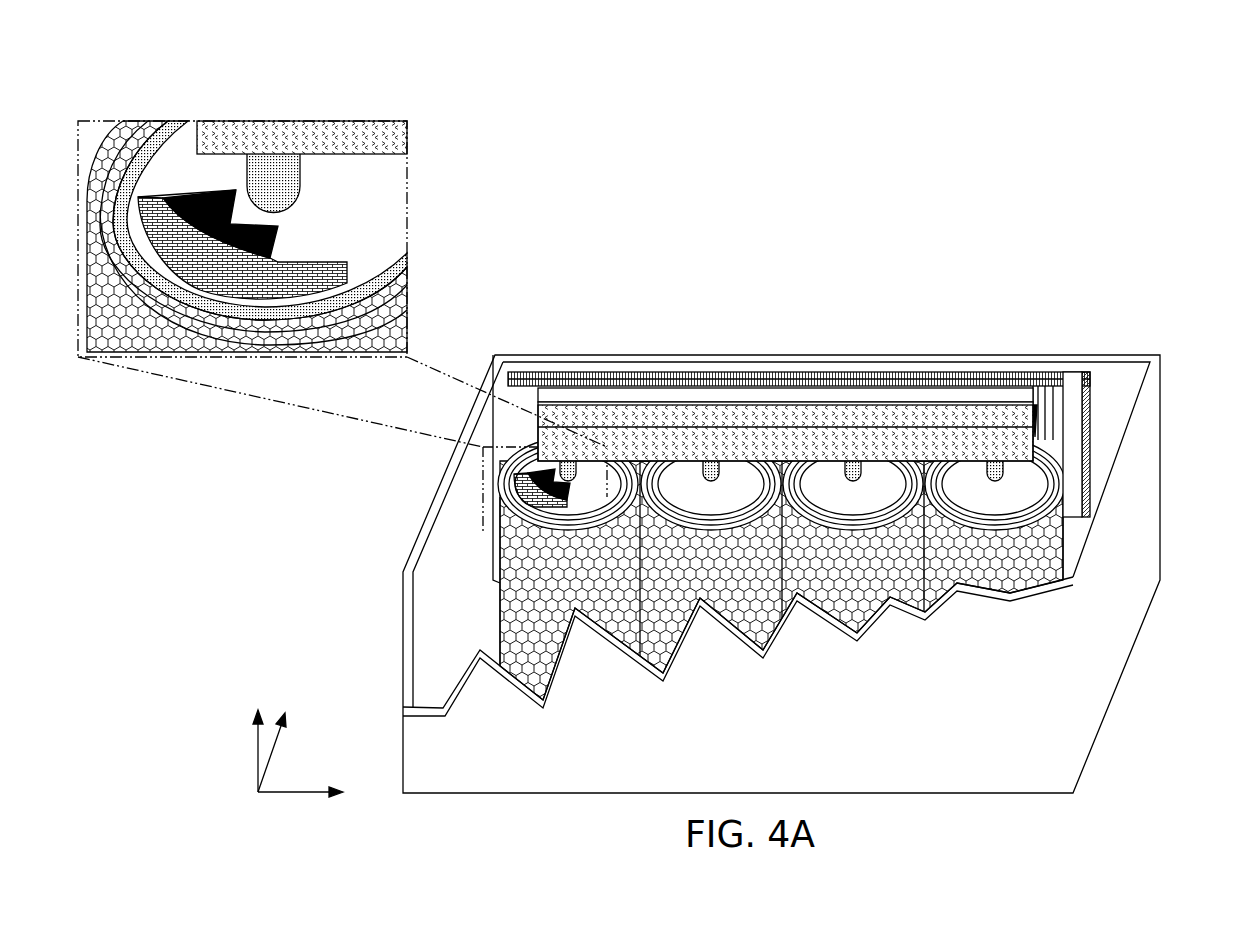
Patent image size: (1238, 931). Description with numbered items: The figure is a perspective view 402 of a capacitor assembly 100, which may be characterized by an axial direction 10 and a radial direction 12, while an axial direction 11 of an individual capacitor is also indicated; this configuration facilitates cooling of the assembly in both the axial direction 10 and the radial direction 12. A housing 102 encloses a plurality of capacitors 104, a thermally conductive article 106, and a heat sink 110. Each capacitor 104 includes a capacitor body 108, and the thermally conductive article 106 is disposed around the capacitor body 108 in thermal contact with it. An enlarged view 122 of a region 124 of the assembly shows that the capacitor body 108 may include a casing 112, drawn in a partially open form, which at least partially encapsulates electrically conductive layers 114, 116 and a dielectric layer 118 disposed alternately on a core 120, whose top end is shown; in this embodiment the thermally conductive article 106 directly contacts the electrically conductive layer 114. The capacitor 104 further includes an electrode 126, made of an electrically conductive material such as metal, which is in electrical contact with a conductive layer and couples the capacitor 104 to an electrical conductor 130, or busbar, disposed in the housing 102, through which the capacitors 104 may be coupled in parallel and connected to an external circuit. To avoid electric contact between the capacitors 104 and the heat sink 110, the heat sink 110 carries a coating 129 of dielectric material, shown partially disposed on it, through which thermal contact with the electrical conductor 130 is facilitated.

The axial direction 10 is at (310, 790).
The axial direction of the capacitor 11 is at (257, 745).
The radial direction 12 is at (275, 743).
The capacitor assembly 100 is at (792, 353).
The housing 102 is at (1137, 493).
The capacitors 104 is at (614, 357).
The thermally conductive article 106 is at (1023, 550).
The capacitor body 108 is at (694, 384).
The heat sink 110 is at (1038, 382).
The casing 112 is at (733, 502).
The electrically conductive layer 114 is at (135, 190).
The electrically conductive layer 116 is at (177, 197).
The dielectric layer 118 is at (167, 197).
The core 120 is at (277, 245).
The enlarged view 122 is at (333, 120).
The region 124 is at (483, 500).
The electrode 126 is at (280, 177).
The coating 129 is at (977, 397).
The electrical conductor 130 is at (897, 417).
The perspective view 402 is at (953, 145).